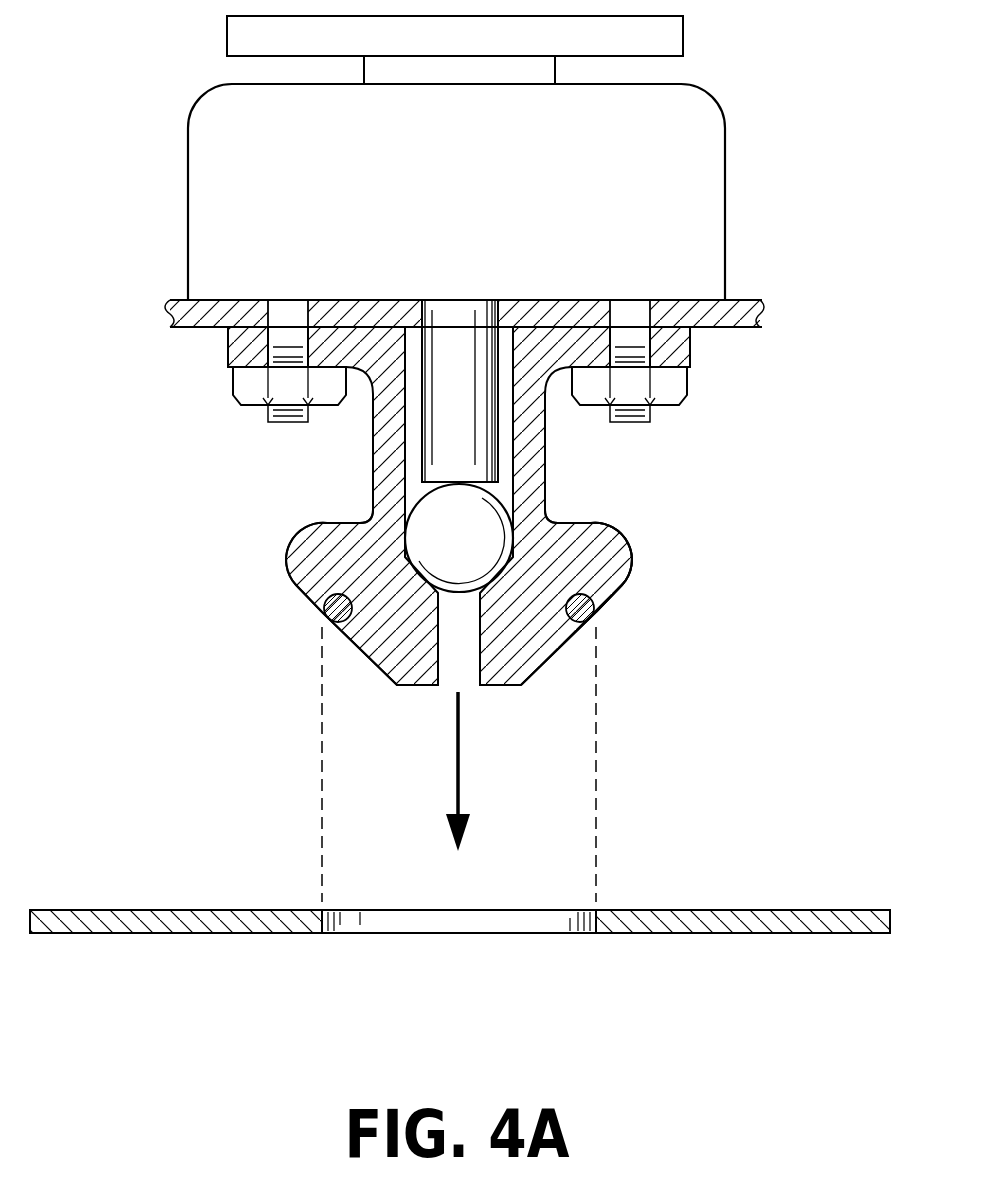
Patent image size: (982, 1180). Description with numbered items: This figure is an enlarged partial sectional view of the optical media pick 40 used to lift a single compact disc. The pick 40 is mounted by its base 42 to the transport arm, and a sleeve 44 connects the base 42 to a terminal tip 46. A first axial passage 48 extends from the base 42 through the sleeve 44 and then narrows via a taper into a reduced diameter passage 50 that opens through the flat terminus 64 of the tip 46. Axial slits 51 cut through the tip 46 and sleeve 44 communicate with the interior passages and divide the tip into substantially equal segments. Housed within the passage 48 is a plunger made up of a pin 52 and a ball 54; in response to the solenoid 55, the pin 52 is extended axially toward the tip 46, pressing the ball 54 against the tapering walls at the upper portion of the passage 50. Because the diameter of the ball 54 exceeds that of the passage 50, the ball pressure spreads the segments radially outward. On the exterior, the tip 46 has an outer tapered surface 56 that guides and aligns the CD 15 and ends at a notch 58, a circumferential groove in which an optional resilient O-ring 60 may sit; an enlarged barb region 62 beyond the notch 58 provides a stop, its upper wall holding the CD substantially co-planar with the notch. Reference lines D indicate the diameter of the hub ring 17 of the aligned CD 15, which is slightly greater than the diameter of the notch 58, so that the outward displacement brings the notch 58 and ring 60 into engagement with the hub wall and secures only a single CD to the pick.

The CD 15 is at (752, 918).
The hub ring 17 is at (333, 925).
The optical media pick 40 is at (592, 489).
The base 42 is at (573, 348).
The sleeve 44 is at (393, 453).
The terminal tip 46 is at (363, 633).
The first axial passage 48 is at (506, 380).
The reduced diameter passage 50 is at (438, 600).
The axial slits 51 is at (440, 668).
The pin 52 is at (440, 420).
The ball 54 is at (480, 552).
The solenoid 55 is at (188, 210).
The outer tapered surface 56 is at (557, 652).
The notch 58 is at (320, 603).
The ring 60 is at (590, 610).
The barb region 62 is at (640, 547).
The flat terminus 64 is at (484, 688).
The reference lines D is at (590, 760).